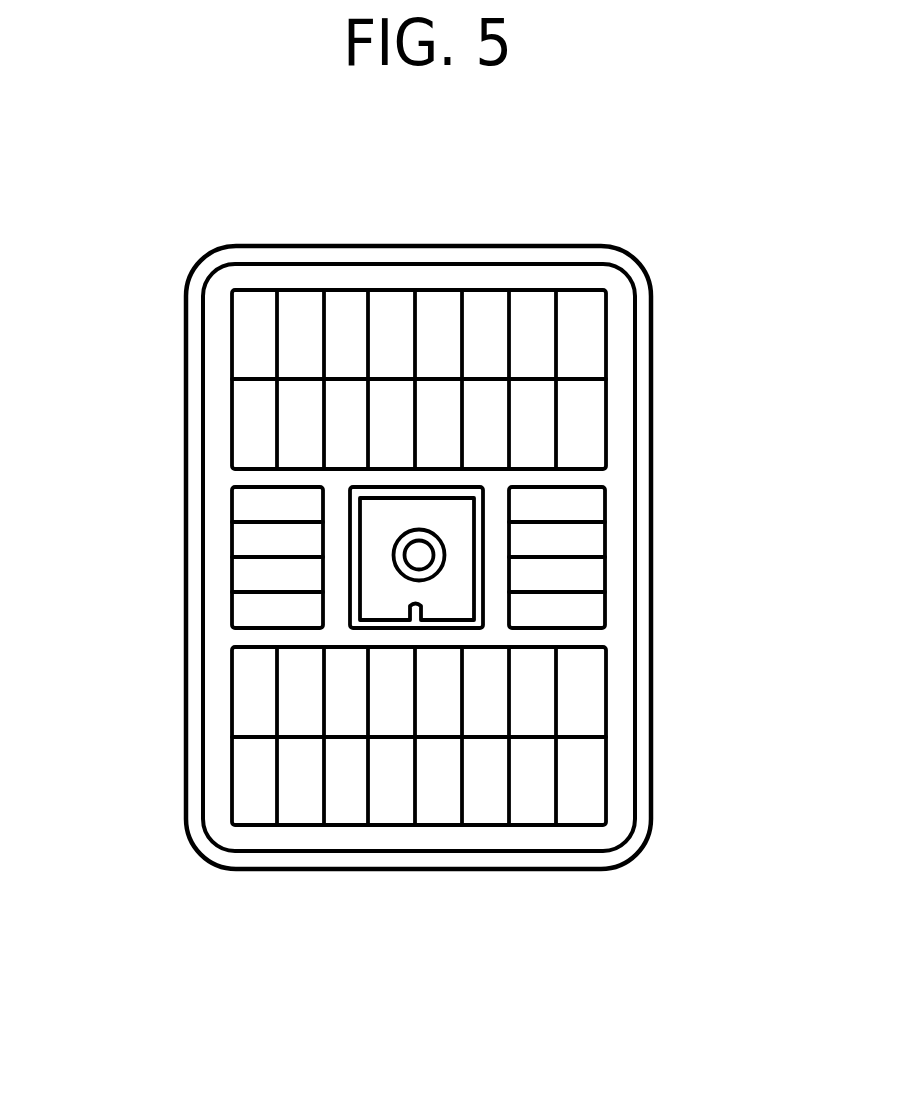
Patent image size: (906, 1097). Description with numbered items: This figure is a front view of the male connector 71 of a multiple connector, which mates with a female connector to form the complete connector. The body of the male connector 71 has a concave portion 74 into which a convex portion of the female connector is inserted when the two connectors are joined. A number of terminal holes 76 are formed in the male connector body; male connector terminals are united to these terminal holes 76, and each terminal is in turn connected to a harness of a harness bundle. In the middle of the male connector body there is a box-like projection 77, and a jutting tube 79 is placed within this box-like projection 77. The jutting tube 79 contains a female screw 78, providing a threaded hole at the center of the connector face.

The male connector 71 is at (450, 243).
The concave portion 74 is at (204, 358).
The terminal holes 76 is at (345, 292).
The box-like projection 77 is at (483, 576).
The female screw 78 is at (411, 568).
The jutting tube 79 is at (436, 571).